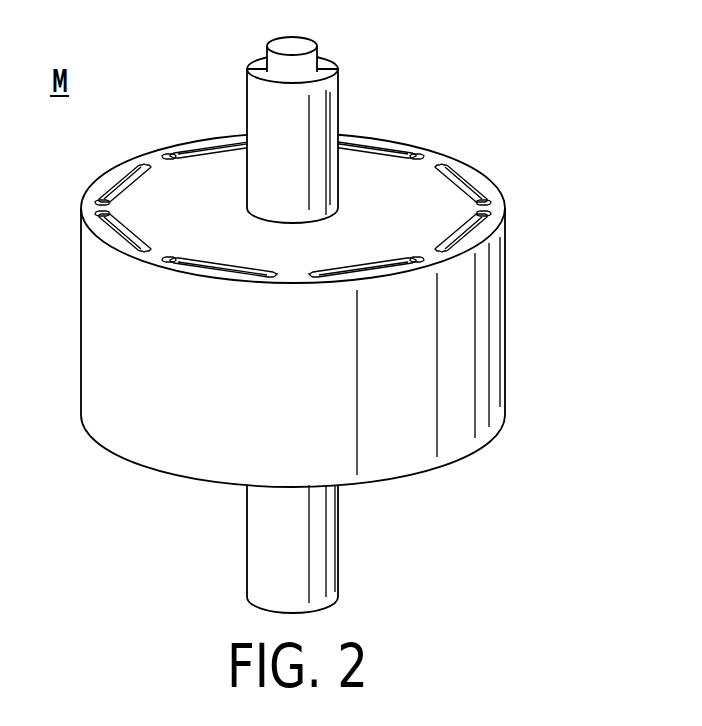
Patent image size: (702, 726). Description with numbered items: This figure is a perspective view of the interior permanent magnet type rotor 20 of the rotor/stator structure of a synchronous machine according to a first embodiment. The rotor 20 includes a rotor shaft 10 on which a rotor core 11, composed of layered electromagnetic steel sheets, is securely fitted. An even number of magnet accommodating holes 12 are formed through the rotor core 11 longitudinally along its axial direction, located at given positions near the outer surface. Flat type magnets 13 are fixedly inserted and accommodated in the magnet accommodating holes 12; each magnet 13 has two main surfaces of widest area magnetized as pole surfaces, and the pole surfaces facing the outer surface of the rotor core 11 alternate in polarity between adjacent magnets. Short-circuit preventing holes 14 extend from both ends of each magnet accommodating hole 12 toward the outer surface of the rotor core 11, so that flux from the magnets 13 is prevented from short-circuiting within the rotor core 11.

The rotor shaft 10 is at (327, 95).
The rotor core 11 is at (470, 175).
The magnet accommodating hole 12 is at (453, 225).
The flat type magnet 13 is at (450, 238).
The short-circuit preventing hole 14 is at (458, 221).
The rotor 20 is at (342, 333).